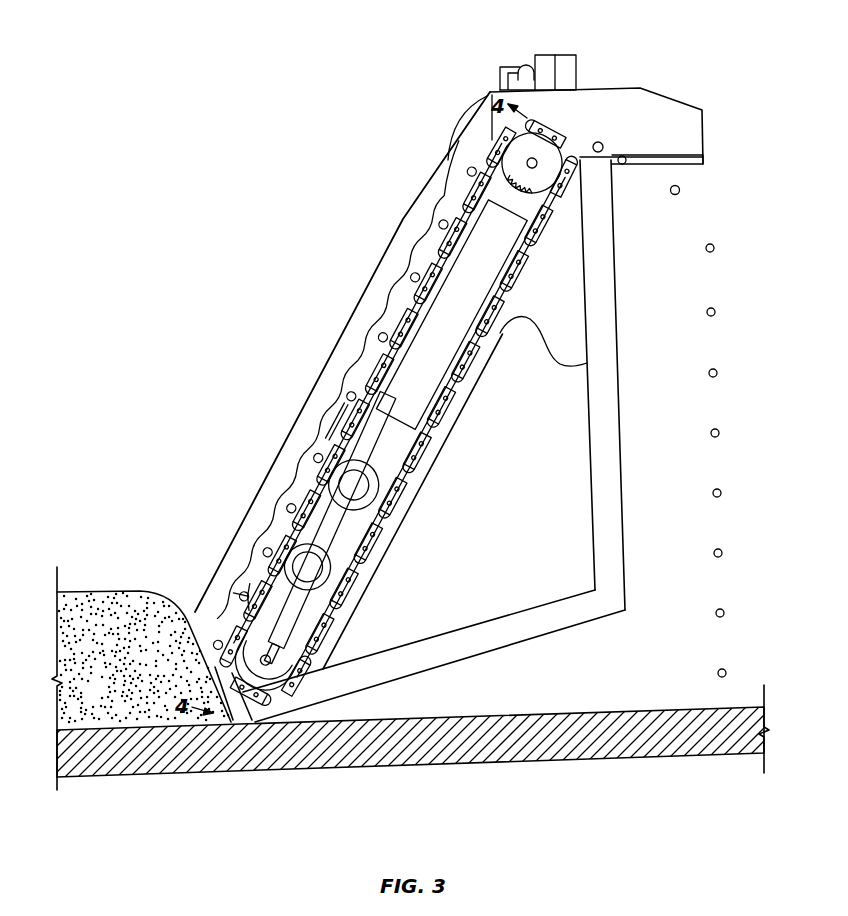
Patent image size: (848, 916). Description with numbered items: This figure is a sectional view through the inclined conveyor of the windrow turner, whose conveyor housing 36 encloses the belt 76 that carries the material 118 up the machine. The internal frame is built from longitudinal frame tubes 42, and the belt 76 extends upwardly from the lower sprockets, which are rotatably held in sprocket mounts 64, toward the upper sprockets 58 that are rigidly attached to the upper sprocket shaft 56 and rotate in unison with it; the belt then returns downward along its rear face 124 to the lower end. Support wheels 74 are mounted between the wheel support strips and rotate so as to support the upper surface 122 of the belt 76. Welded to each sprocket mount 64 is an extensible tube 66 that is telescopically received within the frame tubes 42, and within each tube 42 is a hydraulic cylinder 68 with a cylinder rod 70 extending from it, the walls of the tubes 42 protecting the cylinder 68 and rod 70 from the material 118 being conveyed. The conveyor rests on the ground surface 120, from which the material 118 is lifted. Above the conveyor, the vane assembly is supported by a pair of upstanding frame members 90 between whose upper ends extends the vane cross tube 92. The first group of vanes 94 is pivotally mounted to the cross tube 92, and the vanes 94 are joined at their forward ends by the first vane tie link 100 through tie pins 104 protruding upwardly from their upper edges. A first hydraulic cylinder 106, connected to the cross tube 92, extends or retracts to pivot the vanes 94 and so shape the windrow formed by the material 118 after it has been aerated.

The conveyor frame 36 is at (387, 254).
The longitudinal frame tubes 42 is at (317, 480).
The upper sprocket shaft 56 is at (540, 172).
The upper sprockets 58 is at (512, 168).
The sprocket mounts 64 is at (290, 667).
The extensible tube 66 is at (690, 163).
The hydraulic cylinder 68 is at (408, 472).
The cylinder rod 70 is at (378, 562).
The support wheels 74 is at (522, 268).
The belt 76 is at (358, 387).
The upstanding frame members 90 is at (610, 322).
The vane cross tube 92 is at (563, 55).
The first group of vanes 94 is at (672, 97).
The first vane tie link 100 is at (513, 63).
The tie pins 104 is at (498, 75).
The first hydraulic cylinder 106 is at (527, 60).
The material 118 is at (717, 246).
The ground surface 120 is at (555, 720).
The upper surface of the belt 122 is at (331, 440).
The rear face of the belt 124 is at (427, 427).